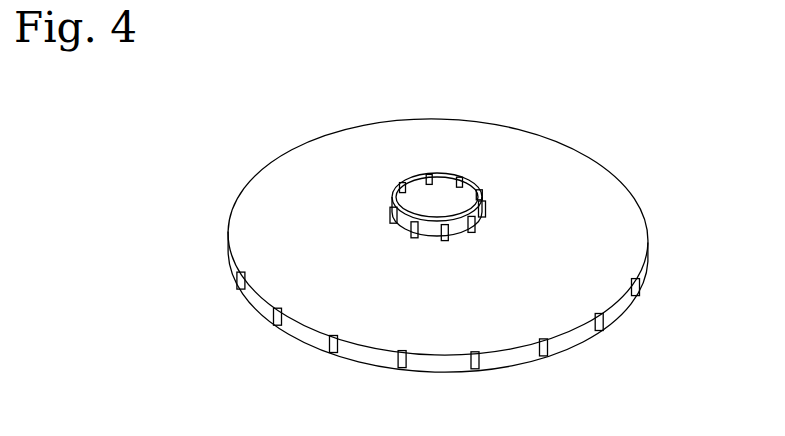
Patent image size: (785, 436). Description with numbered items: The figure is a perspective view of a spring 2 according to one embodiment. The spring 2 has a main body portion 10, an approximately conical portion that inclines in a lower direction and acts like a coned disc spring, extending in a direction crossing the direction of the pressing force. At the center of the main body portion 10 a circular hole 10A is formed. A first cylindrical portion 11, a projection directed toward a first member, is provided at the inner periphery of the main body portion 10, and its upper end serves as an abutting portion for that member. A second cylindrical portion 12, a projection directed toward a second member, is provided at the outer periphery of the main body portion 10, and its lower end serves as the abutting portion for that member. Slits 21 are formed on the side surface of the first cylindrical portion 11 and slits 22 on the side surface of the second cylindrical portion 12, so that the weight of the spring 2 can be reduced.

The spring 2 is at (630, 113).
The main body portion 10 is at (612, 256).
The hole 10A is at (433, 206).
The first cylindrical portion 11 is at (486, 186).
The second cylindrical portion 12 is at (620, 297).
The slits 21 is at (392, 214).
The slits 22 is at (600, 323).